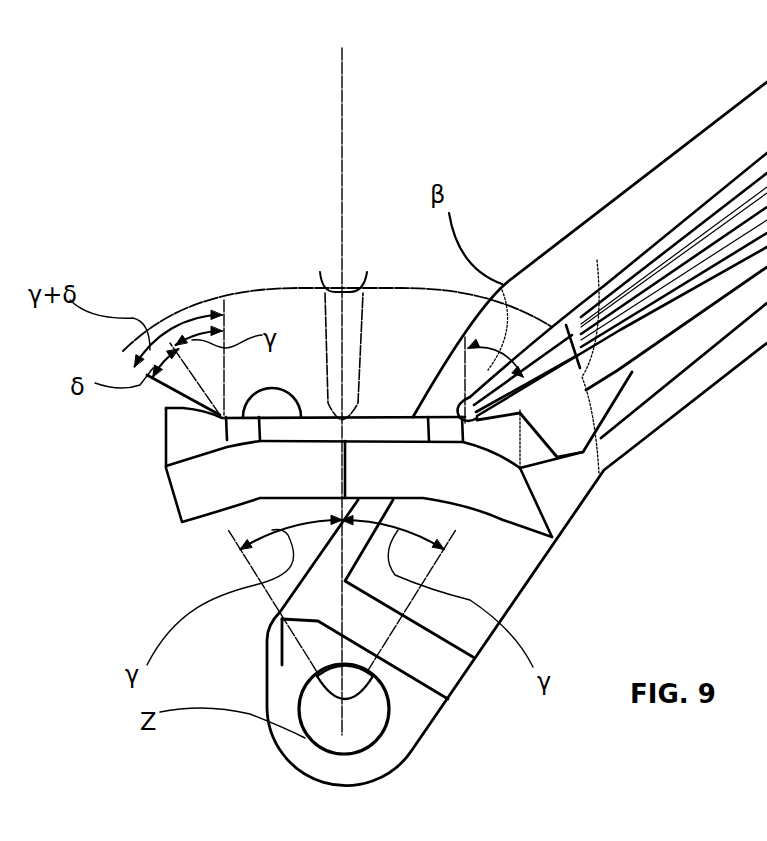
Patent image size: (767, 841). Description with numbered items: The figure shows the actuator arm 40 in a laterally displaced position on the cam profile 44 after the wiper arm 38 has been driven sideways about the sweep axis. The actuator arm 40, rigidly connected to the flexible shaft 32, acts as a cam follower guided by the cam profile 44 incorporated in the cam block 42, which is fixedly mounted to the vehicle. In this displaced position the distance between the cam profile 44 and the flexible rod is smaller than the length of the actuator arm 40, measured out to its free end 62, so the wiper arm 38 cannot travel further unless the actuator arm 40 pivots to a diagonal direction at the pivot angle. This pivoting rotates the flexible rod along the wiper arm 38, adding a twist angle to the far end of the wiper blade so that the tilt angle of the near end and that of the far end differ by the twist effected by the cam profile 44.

The flexible shaft 32 is at (604, 280).
The wiper arm 38 is at (668, 160).
The actuator arm 40 is at (597, 478).
The cam block 42 is at (188, 530).
The cam profile 44 is at (240, 420).
The free end 62 is at (380, 405).